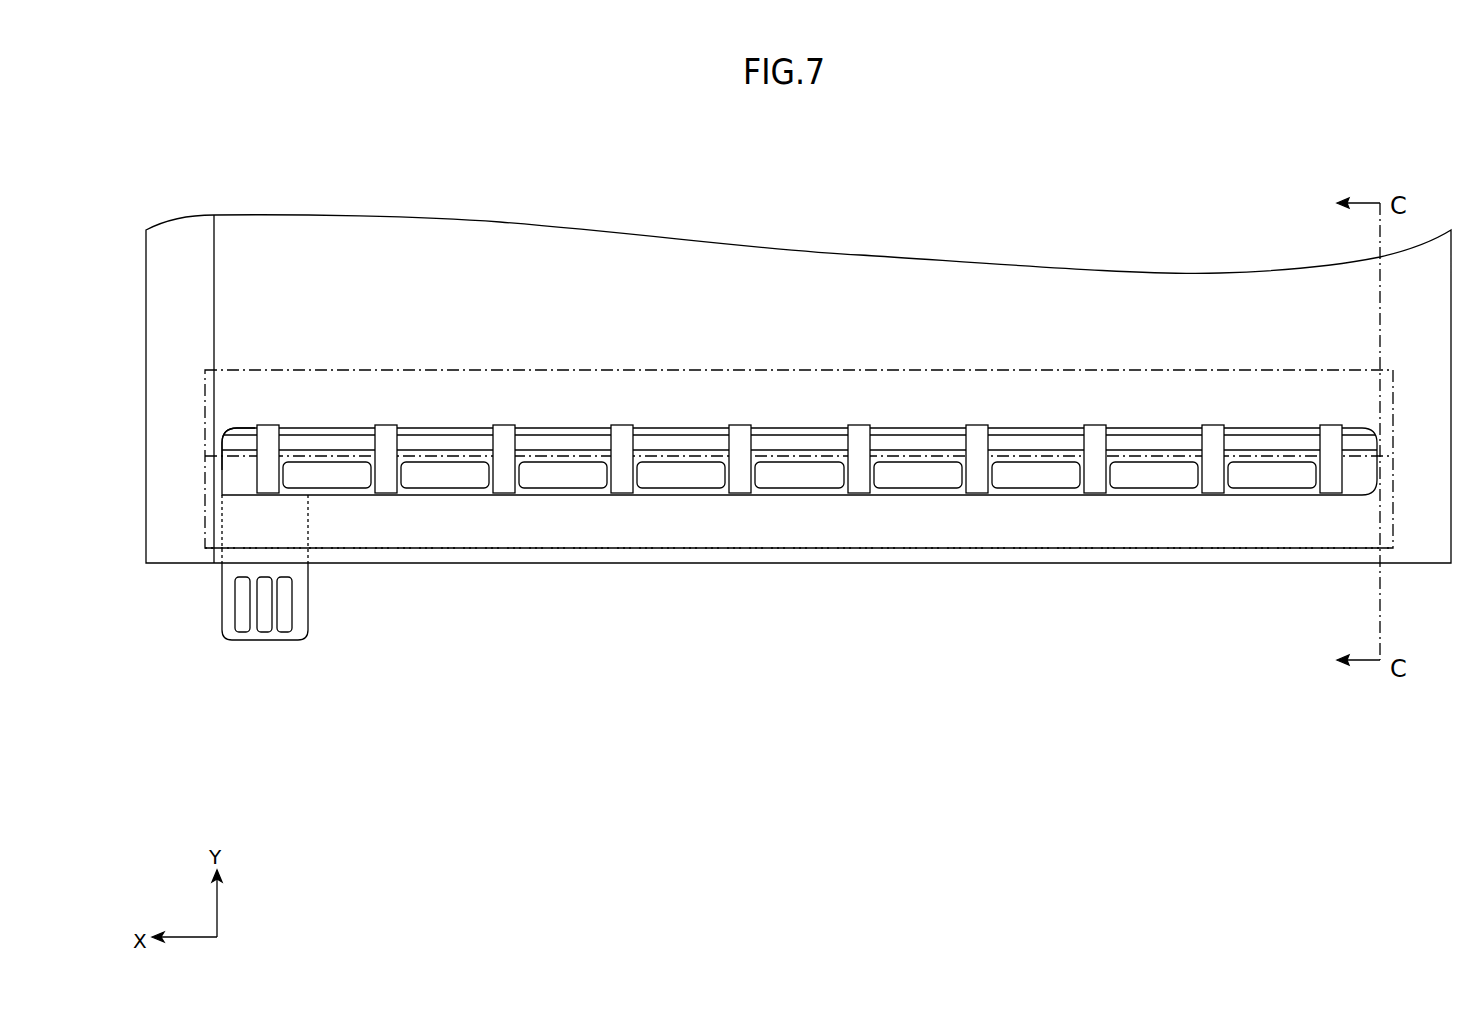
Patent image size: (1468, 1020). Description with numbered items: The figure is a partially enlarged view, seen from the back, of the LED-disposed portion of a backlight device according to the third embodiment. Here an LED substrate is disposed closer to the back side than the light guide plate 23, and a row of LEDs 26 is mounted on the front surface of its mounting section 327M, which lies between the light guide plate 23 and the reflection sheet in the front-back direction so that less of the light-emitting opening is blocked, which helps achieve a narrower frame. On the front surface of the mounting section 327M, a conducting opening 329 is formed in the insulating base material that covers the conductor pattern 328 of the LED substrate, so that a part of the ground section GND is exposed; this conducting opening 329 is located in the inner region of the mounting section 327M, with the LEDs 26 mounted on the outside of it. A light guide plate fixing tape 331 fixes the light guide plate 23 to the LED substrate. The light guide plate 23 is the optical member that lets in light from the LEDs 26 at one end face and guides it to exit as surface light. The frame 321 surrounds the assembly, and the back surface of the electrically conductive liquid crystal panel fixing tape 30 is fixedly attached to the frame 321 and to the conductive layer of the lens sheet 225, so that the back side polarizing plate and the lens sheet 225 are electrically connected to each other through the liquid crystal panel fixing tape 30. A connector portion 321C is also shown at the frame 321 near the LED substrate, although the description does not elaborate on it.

The frame 321 is at (505, 563).
The connector portion 321C is at (300, 553).
The lens sheet 225 is at (233, 389).
The light guide plate 23 is at (220, 475).
The LEDs 26 is at (827, 487).
The liquid crystal panel fixing tape 30 is at (705, 548).
The mounting section 327M is at (243, 475).
The conductor pattern 328 is at (678, 445).
The conducting opening 329 is at (558, 437).
The light guide plate fixing tape 331 is at (265, 433).